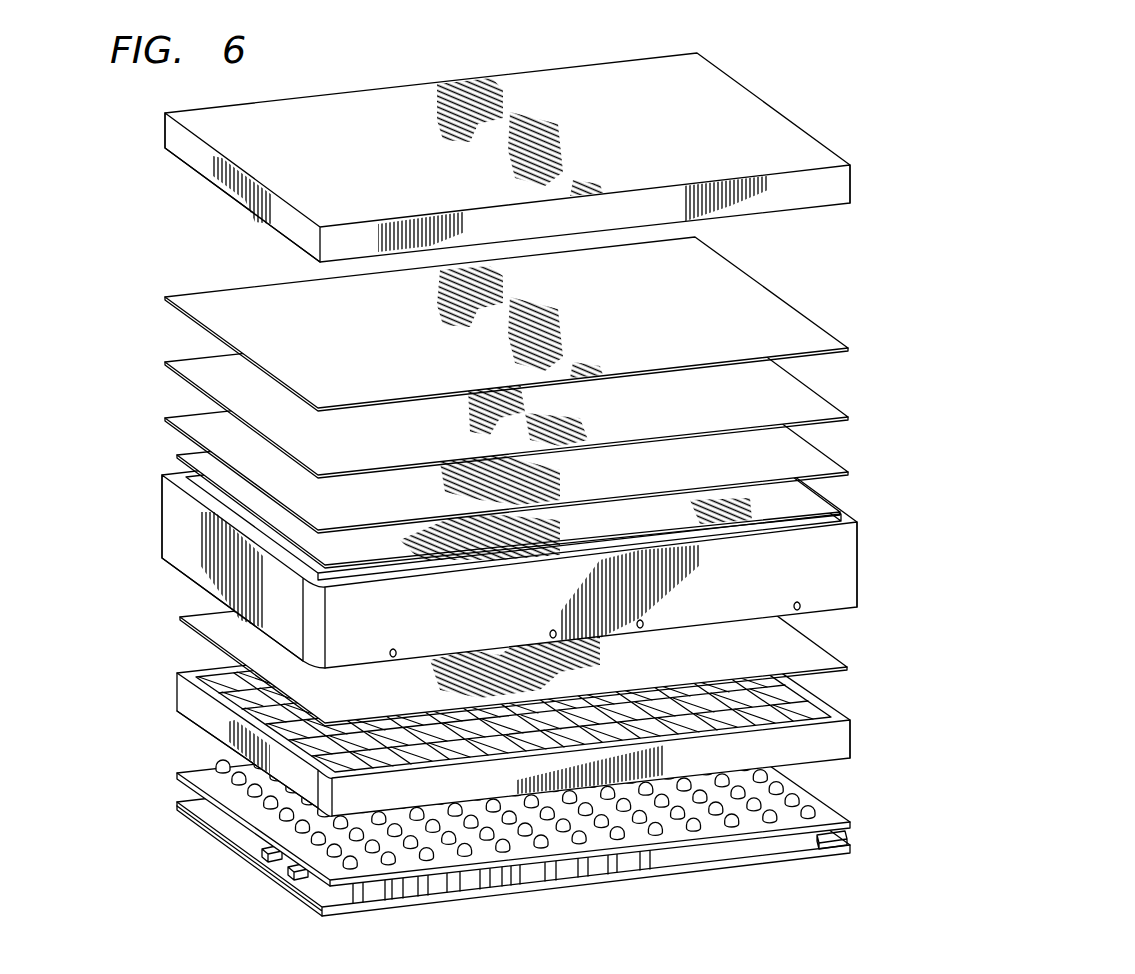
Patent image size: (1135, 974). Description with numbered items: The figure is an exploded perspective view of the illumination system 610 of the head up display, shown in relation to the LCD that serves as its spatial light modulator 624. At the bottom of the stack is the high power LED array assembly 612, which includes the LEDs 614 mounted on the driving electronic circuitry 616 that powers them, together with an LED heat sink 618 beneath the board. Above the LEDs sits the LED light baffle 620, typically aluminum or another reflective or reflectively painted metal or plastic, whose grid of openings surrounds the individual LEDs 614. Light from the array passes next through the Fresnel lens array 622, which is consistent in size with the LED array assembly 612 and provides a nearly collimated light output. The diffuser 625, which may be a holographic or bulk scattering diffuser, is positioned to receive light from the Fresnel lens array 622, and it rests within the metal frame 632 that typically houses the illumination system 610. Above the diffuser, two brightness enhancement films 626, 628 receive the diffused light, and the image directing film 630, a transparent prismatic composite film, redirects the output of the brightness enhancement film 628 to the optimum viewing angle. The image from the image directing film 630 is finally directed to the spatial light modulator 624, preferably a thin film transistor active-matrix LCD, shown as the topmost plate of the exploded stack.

The illumination system 610 is at (112, 277).
The LED array assembly 612 is at (172, 572).
The LEDs 614 is at (788, 798).
The driving electronic circuitry 616 is at (750, 860).
The LED heat sink 618 is at (855, 820).
The LED light baffle 620 is at (818, 693).
The Fresnel lens array 622 is at (813, 653).
The spatial light modulator 624 is at (812, 135).
The diffuser 625 is at (812, 497).
The brightness enhancement film 626 is at (812, 466).
The brightness enhancement film 628 is at (806, 412).
The image directing film 630 is at (790, 316).
The metal frame 632 is at (832, 558).